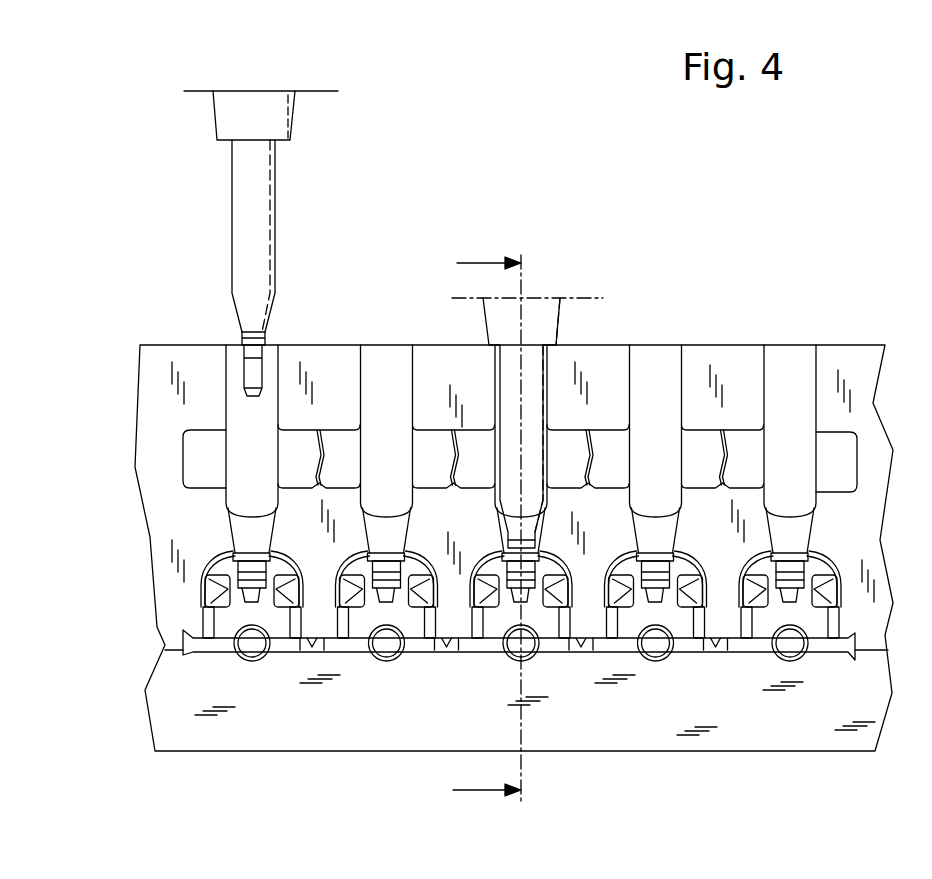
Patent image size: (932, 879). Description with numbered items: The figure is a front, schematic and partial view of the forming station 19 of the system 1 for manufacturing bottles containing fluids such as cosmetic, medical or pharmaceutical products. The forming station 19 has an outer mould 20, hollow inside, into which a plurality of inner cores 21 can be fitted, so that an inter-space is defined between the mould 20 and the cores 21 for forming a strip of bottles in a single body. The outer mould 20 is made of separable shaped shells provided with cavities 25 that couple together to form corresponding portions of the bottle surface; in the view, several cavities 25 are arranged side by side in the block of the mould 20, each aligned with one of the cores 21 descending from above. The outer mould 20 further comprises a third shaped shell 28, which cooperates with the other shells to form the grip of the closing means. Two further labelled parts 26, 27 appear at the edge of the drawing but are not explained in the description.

The system 1 is at (181, 172).
The forming station 19 is at (720, 281).
The outer mould 20 is at (833, 348).
The inner cores 21 is at (262, 233).
The cavities 25 is at (203, 445).
The upper block part 26 is at (862, 380).
The lower block part 27 is at (926, 531).
The third shaped shell 28 is at (592, 723).